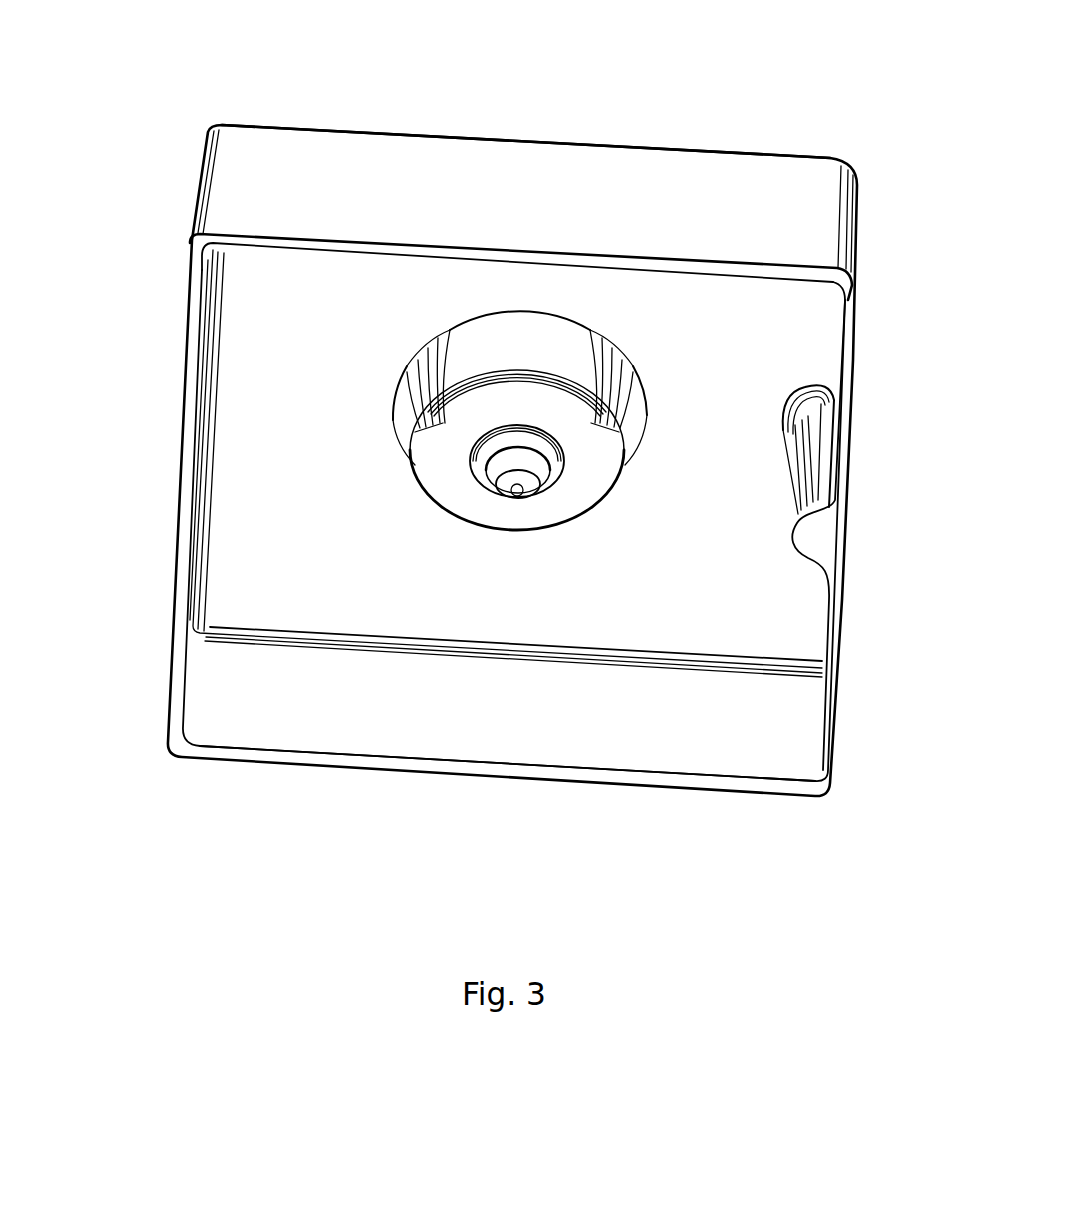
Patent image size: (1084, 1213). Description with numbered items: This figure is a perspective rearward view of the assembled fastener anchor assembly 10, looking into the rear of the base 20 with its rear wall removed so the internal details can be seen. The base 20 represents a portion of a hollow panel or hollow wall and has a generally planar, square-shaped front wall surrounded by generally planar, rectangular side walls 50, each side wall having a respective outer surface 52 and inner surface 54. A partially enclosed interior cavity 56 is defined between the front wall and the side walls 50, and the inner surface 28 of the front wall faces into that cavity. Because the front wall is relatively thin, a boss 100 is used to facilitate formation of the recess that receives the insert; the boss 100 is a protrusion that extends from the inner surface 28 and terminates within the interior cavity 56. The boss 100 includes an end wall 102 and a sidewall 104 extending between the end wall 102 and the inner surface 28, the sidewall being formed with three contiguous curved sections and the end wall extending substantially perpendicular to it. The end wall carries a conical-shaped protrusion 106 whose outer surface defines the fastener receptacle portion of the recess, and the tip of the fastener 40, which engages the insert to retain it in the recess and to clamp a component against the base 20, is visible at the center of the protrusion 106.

The fastener anchor assembly 10 is at (845, 143).
The base 20 is at (846, 513).
The inner surface 28 is at (257, 402).
The fastener 40 is at (540, 484).
The side walls 50 is at (387, 172).
The outer surfaces 52 is at (613, 195).
The inner surfaces 54 is at (433, 730).
The interior cavity 56 is at (513, 460).
The boss 100 is at (600, 515).
The end wall 102 is at (438, 463).
The sidewall 104 is at (583, 372).
The protrusion 106 is at (507, 462).